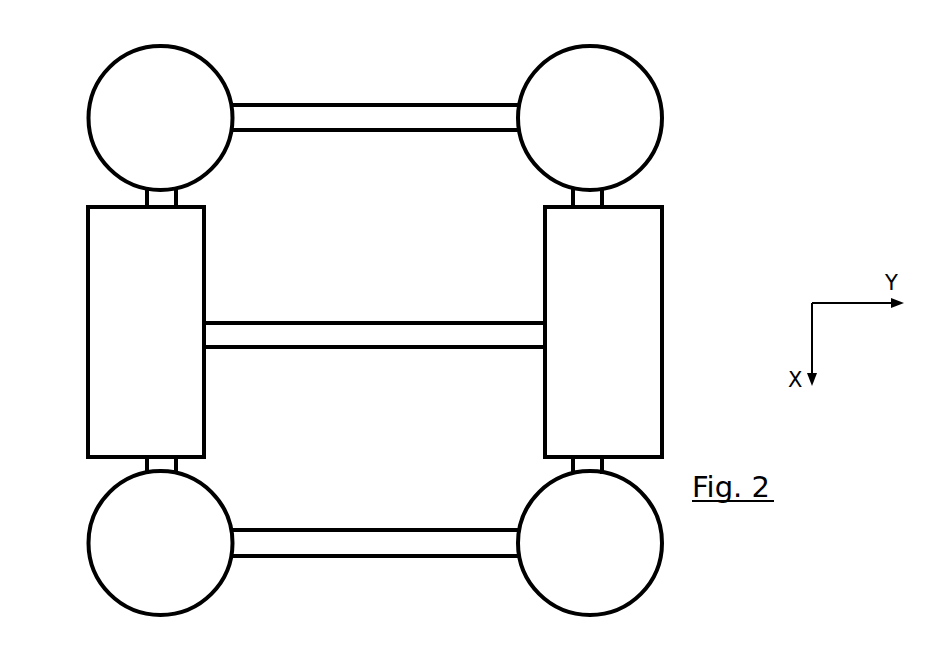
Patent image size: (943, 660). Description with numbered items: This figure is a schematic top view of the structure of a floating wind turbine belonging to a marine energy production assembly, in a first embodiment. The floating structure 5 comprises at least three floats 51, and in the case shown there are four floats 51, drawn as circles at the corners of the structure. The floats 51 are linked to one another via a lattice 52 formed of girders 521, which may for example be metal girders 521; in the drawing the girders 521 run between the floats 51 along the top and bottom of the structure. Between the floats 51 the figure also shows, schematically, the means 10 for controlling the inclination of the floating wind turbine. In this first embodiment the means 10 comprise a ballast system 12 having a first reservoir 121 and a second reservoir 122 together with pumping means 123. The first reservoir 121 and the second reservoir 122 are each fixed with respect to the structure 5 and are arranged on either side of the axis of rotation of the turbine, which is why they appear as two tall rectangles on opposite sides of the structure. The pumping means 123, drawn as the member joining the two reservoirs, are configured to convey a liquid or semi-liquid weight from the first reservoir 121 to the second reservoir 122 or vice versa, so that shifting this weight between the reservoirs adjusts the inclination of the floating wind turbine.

The floating structure 5 is at (413, 337).
The float 51 is at (130, 108).
The lattice 52 is at (406, 88).
The girder 521 is at (257, 117).
The means for controlling the inclination 10 is at (457, 314).
The ballast system 12 is at (424, 332).
The first reservoir 121 is at (637, 328).
The second reservoir 122 is at (182, 395).
The pumping means 123 is at (295, 333).